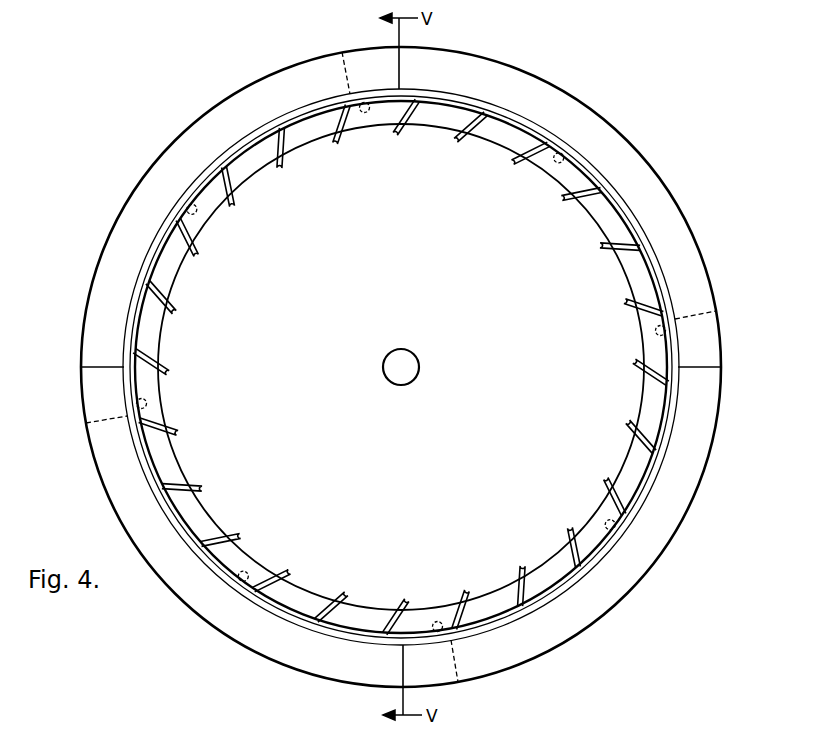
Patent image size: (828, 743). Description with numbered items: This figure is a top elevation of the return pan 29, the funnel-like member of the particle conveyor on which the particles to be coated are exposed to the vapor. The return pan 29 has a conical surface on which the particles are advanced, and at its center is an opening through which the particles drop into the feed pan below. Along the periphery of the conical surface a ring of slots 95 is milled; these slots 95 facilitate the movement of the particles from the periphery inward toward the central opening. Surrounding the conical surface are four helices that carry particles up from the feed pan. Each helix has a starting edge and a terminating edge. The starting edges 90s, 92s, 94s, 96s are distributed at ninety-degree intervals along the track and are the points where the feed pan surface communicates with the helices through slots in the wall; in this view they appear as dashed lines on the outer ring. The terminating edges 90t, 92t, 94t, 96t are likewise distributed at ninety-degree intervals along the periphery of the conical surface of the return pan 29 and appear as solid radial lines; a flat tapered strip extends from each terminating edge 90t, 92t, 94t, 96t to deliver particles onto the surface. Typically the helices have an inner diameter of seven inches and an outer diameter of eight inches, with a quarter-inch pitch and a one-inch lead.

The return pan 29 is at (736, 501).
The slots 95 is at (391, 621).
The terminating edge 90t is at (401, 72).
The terminating edge 92t is at (109, 366).
The terminating edge 94t is at (403, 663).
The terminating edge 96t is at (700, 368).
The starting edge 90s is at (690, 315).
The starting edge 92s is at (343, 77).
The starting edge 94s is at (115, 424).
The starting edge 96s is at (459, 661).